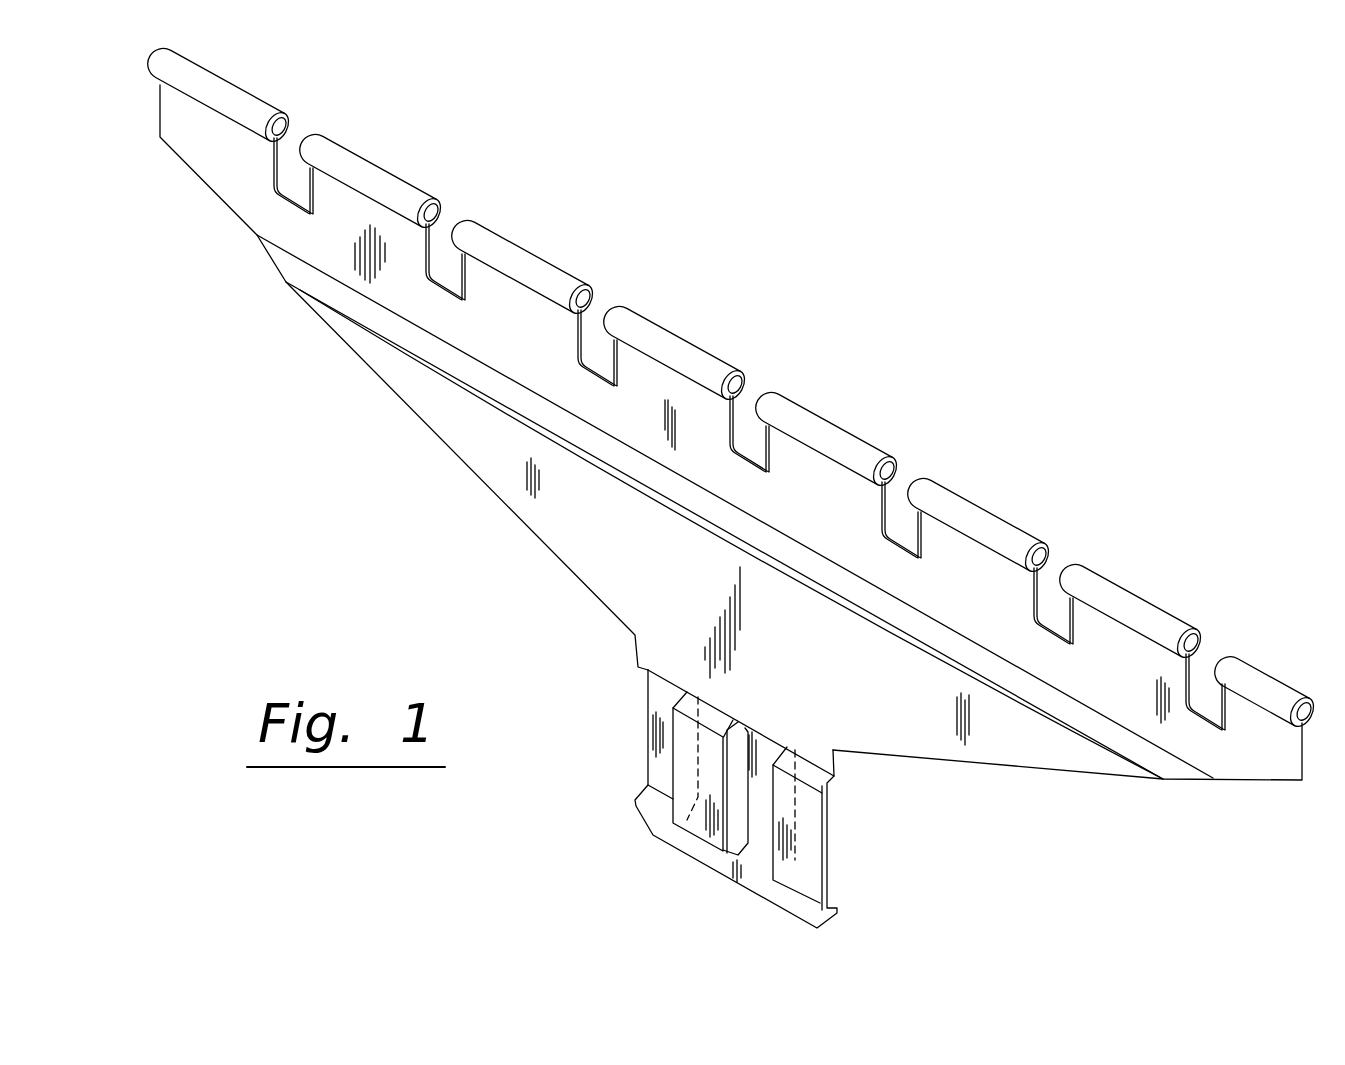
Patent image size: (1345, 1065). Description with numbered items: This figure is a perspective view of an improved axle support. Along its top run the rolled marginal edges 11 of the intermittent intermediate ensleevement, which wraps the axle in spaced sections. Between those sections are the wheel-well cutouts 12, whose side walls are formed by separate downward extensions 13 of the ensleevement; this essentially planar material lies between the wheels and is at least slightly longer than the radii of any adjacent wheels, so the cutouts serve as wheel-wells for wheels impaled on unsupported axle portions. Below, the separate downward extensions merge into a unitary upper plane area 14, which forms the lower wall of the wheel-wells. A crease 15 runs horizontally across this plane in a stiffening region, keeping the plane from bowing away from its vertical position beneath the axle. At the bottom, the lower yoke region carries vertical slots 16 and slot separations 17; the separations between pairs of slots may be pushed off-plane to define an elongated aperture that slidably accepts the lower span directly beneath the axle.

The rolled marginal edges 11 is at (827, 427).
The wheel-well cutouts 12 is at (745, 420).
The downward extensions 13 is at (820, 492).
The upper unitary plane area 14 is at (903, 580).
The crease 15 is at (1057, 722).
The vertical slots 16 is at (730, 792).
The slot separations 17 is at (812, 850).